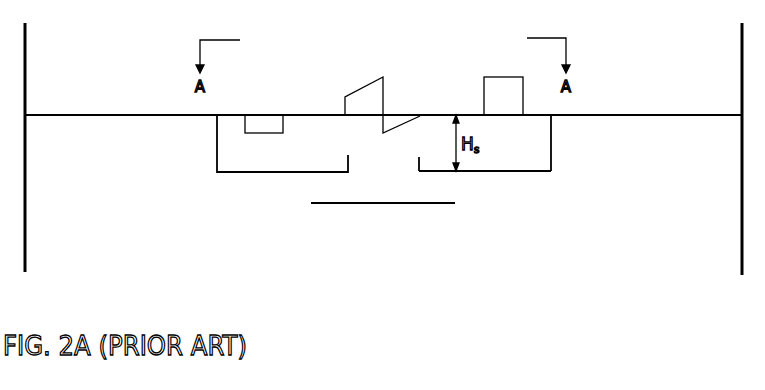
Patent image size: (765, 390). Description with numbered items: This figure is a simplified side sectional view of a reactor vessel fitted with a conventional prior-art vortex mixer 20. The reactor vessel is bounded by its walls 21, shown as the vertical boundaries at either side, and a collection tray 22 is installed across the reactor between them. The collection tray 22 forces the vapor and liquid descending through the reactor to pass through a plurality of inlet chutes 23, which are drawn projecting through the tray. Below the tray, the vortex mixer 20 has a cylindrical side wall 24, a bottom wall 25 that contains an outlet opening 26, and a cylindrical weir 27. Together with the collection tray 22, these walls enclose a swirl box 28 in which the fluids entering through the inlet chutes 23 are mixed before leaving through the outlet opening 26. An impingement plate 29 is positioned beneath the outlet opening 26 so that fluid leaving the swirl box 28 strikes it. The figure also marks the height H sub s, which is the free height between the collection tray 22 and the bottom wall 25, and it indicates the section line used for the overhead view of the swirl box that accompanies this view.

The vortex mixer 20 is at (359, 161).
The walls 21 is at (27, 192).
The collection tray 22 is at (675, 116).
The inlet chutes 23 is at (259, 113).
The cylindrical side wall 24 is at (552, 138).
The bottom wall 25 is at (505, 171).
The outlet opening 26 is at (385, 162).
The cylindrical weir 27 is at (427, 163).
The swirl box 28 is at (313, 138).
The impingement plate 29 is at (422, 204).